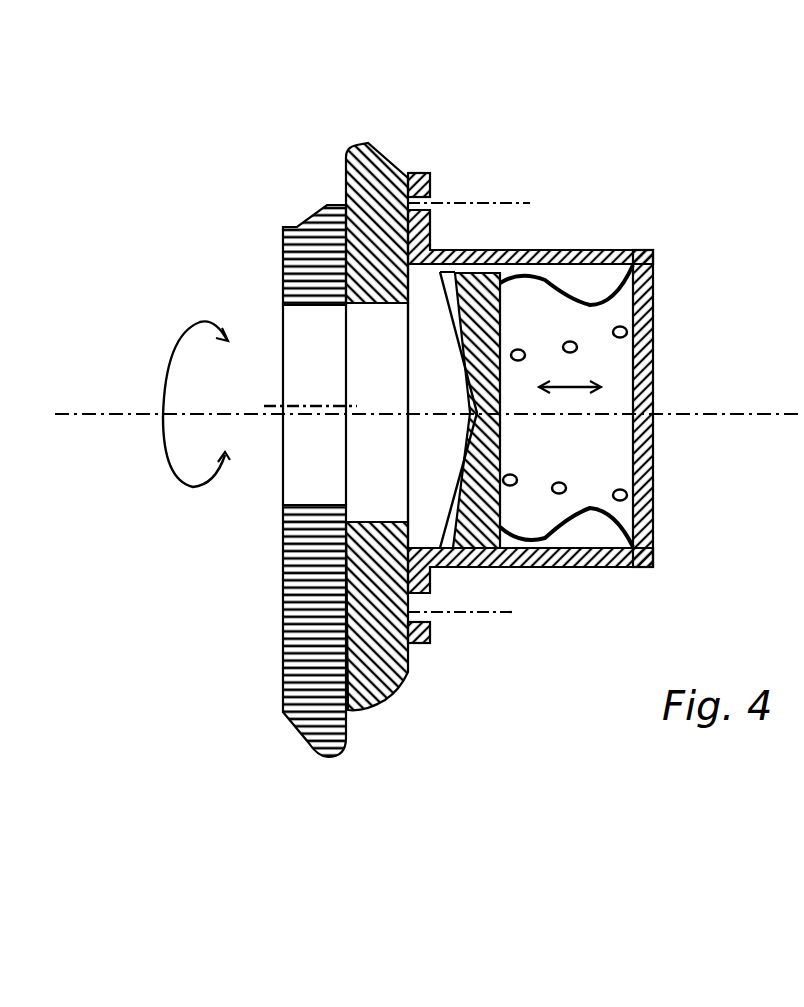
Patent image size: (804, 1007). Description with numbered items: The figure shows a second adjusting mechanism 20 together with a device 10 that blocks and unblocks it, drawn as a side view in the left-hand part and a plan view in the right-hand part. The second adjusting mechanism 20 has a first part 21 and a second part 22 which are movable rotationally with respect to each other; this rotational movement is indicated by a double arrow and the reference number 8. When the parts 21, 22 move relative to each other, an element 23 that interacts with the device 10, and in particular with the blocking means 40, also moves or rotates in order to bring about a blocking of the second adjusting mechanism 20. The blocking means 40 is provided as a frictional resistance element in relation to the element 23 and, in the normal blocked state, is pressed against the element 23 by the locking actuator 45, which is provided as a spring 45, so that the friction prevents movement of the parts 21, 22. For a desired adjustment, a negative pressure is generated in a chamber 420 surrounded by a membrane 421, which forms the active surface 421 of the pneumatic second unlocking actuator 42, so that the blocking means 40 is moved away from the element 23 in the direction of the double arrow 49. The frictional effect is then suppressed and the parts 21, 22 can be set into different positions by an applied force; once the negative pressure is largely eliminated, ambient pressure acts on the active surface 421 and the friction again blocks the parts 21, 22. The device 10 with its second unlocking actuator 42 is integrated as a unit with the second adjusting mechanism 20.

The rotational movement 8 is at (172, 347).
The device 10 is at (594, 396).
The second adjusting mechanism 20 is at (300, 387).
The first part 21 is at (283, 258).
The second part 22 is at (321, 426).
The element 23 is at (427, 495).
The blocking means 40 is at (500, 250).
The second unlocking actuator 42 is at (585, 288).
The locking actuator 45 is at (578, 340).
The direction of movement 49 is at (575, 385).
The chamber 420 is at (603, 460).
The membrane 421 is at (570, 568).